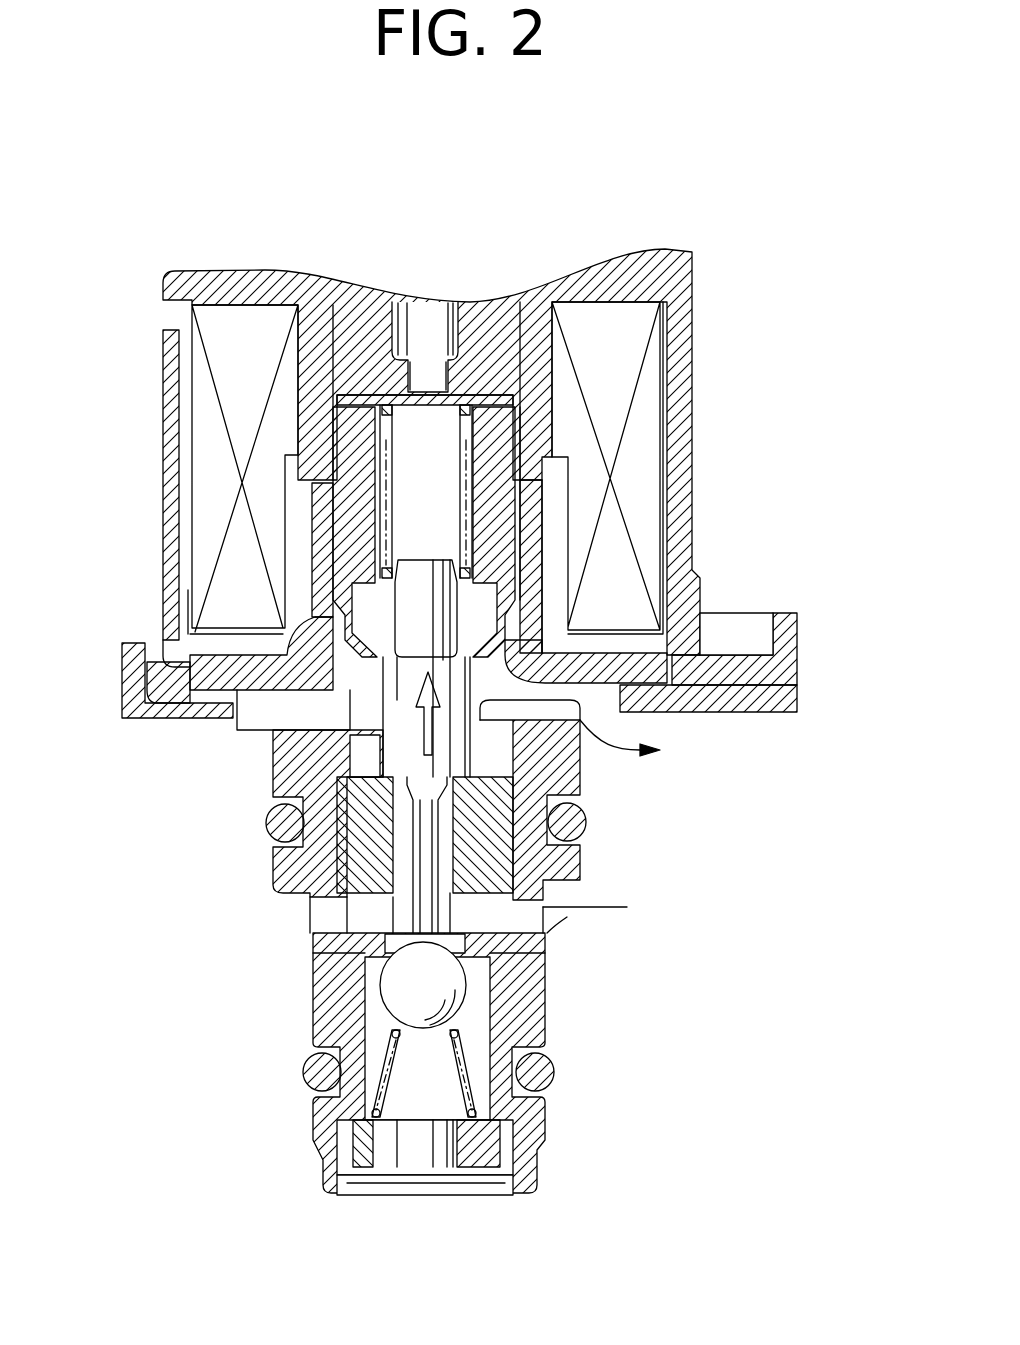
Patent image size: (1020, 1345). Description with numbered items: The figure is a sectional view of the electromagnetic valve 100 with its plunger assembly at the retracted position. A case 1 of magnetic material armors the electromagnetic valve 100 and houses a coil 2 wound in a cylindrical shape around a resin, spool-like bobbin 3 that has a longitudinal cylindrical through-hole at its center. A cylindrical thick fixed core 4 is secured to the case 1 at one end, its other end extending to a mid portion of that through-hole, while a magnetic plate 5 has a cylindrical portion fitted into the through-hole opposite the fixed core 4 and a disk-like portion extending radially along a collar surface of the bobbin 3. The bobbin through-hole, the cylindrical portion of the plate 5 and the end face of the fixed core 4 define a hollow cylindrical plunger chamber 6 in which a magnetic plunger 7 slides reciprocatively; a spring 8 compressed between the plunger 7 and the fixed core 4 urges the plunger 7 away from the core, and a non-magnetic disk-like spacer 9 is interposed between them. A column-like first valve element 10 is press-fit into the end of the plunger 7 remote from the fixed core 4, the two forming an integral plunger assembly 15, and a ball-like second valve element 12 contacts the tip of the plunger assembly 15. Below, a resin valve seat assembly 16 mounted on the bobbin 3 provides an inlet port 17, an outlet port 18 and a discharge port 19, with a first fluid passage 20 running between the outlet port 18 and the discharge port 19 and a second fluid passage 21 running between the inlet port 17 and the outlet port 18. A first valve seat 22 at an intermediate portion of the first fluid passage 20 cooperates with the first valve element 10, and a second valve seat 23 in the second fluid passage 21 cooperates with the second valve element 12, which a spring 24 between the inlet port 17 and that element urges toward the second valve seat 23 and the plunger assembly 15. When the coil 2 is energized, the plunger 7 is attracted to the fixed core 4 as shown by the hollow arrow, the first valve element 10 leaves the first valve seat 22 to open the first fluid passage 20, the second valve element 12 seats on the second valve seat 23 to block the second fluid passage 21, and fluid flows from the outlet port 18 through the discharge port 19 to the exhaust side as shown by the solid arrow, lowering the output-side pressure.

The electromagnetic valve 100 is at (462, 160).
The case 1 is at (693, 277).
The coil 2 is at (630, 455).
The bobbin 3 is at (310, 410).
The fixed core 4 is at (640, 283).
The plate 5 is at (345, 575).
The plunger chamber 6 is at (345, 540).
The plunger 7 is at (360, 497).
The spring 8 is at (550, 517).
The spacer 9 is at (520, 397).
The first valve element 10 is at (395, 742).
The second valve element 12 is at (313, 1010).
The plunger assembly 15 is at (400, 847).
The valve seat assembly 16 is at (490, 848).
The inlet port 17 is at (423, 1196).
The outlet port 18 is at (527, 932).
The discharge port 19 is at (240, 733).
The first fluid passage 20 is at (517, 947).
The second fluid passage 21 is at (482, 1170).
The first valve seat 22 is at (520, 860).
The second valve seat 23 is at (413, 983).
The spring 24 is at (552, 1122).